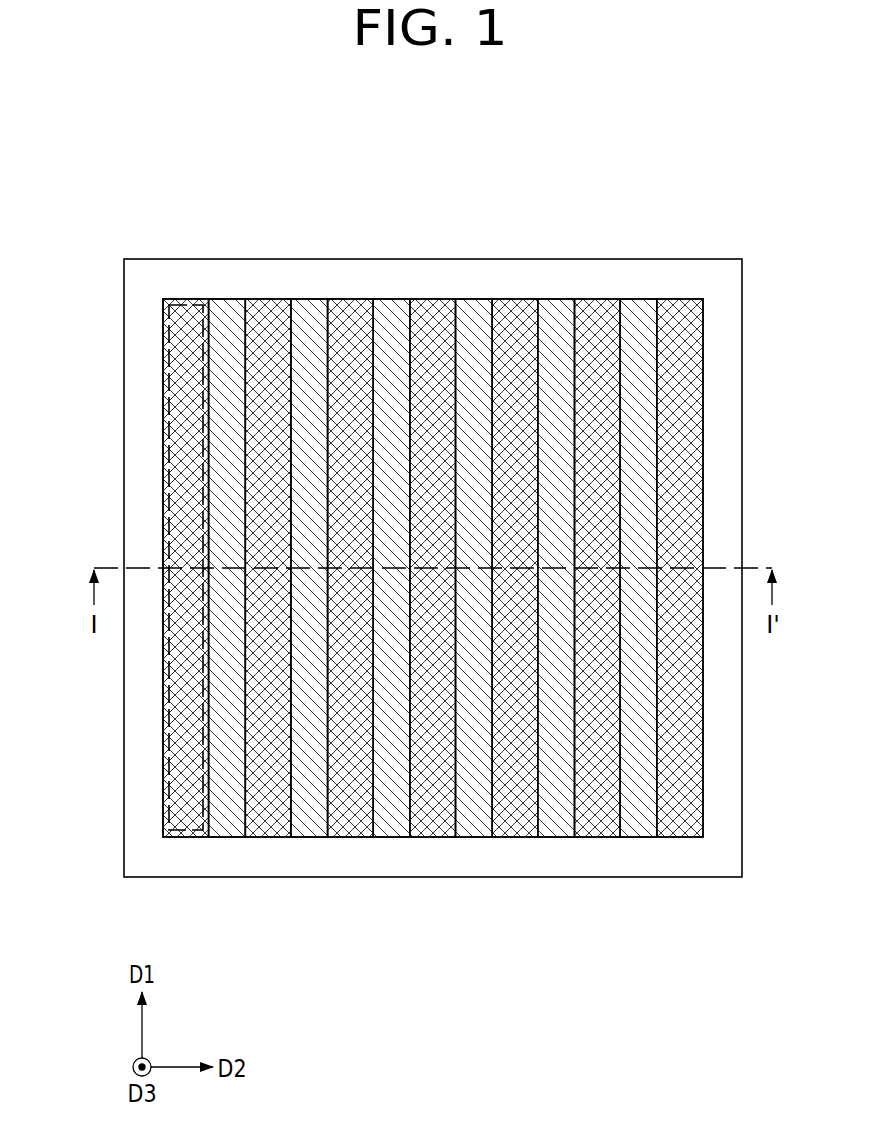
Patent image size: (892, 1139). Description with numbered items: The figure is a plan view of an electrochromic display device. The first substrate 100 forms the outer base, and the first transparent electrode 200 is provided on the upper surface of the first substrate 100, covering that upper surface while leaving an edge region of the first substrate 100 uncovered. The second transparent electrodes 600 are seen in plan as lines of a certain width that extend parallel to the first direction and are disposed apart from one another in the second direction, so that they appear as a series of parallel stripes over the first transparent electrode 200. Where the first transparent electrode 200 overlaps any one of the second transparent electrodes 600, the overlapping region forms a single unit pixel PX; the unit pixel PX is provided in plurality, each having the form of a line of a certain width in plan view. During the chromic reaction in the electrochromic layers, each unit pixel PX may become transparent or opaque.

The first substrate 100 is at (682, 273).
The first transparent electrode 200 is at (555, 310).
The second transparent electrodes 600 is at (600, 308).
The unit pixel PX is at (192, 832).